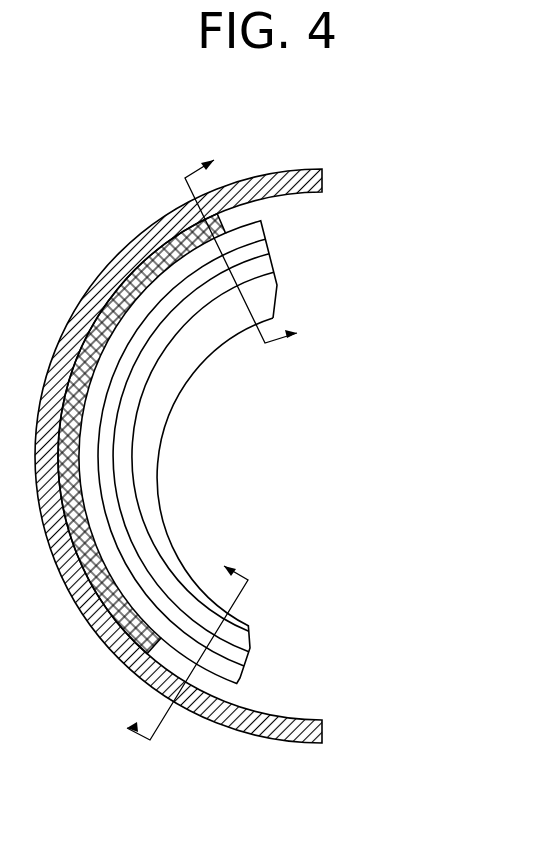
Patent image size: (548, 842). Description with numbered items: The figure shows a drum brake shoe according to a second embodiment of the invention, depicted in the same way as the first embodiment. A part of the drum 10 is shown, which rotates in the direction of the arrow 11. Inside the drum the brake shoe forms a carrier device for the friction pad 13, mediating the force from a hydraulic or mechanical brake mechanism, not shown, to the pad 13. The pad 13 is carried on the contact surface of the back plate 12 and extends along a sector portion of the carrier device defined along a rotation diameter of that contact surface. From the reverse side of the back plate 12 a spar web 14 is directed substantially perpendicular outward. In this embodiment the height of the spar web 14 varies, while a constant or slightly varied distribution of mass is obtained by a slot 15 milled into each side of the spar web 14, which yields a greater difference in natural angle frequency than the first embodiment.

The drum 10 is at (310, 722).
The arrow 11 is at (246, 142).
The back plate 12 is at (244, 677).
The friction pad 13 is at (108, 642).
The spar web 14 is at (161, 449).
The slot 15 is at (263, 268).